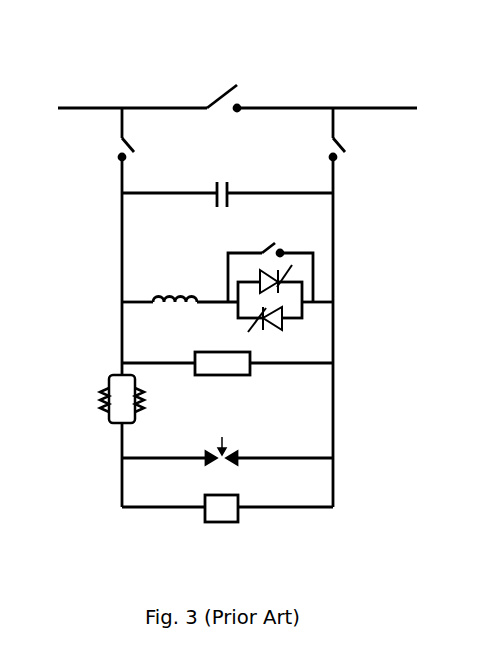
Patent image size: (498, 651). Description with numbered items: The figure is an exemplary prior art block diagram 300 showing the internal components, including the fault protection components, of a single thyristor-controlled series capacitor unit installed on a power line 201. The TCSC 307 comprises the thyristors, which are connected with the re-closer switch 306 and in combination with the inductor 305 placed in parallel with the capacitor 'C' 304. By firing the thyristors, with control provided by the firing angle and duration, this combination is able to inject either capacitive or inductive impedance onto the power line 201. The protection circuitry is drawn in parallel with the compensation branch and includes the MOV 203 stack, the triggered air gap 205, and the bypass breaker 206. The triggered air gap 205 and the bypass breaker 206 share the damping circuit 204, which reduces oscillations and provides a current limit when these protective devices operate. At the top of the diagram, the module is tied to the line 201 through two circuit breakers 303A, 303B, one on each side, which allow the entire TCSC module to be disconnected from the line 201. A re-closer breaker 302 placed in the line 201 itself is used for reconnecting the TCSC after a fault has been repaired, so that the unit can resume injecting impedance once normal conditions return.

The prior art block diagram 300 is at (193, 60).
The power line 201 is at (363, 108).
The re-closer breaker 302 is at (243, 90).
The circuit breaker 303A is at (120, 153).
The circuit breaker 303B is at (337, 160).
The capacitor 304 is at (228, 177).
The inductor 305 is at (185, 290).
The re-closer switch 306 is at (283, 250).
The TCSC unit 307 is at (285, 318).
The MOV stack 203 is at (257, 377).
The damping circuit 204 is at (122, 403).
The triggered air gap 205 is at (223, 463).
The bypass breaker 206 is at (230, 522).